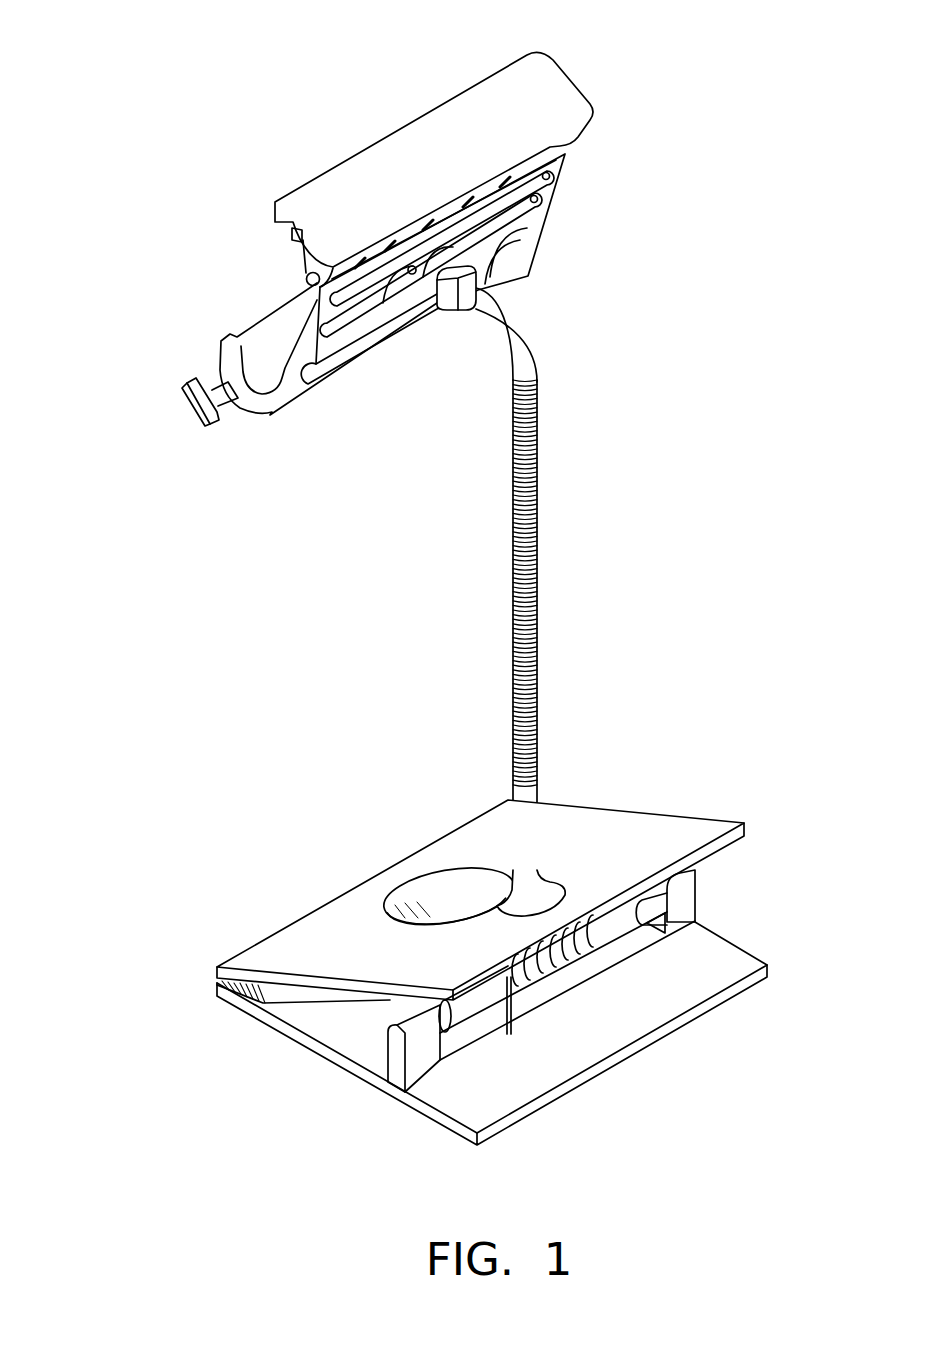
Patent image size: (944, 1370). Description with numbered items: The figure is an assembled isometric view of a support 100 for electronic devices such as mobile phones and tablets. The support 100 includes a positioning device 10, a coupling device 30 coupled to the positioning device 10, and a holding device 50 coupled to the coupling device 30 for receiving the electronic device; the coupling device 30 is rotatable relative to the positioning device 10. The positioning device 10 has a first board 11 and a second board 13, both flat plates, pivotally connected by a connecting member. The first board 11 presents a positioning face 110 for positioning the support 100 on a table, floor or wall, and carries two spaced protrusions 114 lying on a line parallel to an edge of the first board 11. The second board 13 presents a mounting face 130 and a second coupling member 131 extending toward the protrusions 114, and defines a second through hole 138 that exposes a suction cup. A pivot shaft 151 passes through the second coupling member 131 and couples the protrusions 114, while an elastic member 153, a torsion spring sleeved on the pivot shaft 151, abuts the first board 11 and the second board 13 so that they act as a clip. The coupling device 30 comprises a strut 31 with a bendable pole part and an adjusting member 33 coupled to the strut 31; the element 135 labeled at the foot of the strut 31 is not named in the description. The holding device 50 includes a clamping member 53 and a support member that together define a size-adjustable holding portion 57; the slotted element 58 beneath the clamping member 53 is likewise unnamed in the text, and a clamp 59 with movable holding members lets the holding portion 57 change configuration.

The support 100 is at (390, 49).
The positioning device 10 is at (183, 1047).
The first board 11 is at (327, 1053).
The second board 13 is at (310, 985).
The positioning face 110 is at (538, 1104).
The protrusions 114 is at (413, 1060).
The mounting face 130 is at (633, 836).
The second coupling member 131 is at (466, 1022).
The fixing portion 135 is at (521, 823).
The second through hole 138 is at (400, 905).
The pivot shaft 151 is at (616, 925).
The elastic member 153 is at (459, 1022).
The coupling device 30 is at (655, 305).
The strut 31 is at (538, 407).
The adjusting member 33 is at (518, 338).
The holding device 50 is at (578, 150).
The clamping member 53 is at (557, 100).
The holding portion 57 is at (258, 362).
The slotted frame 58 is at (345, 350).
The clamp 59 is at (190, 391).